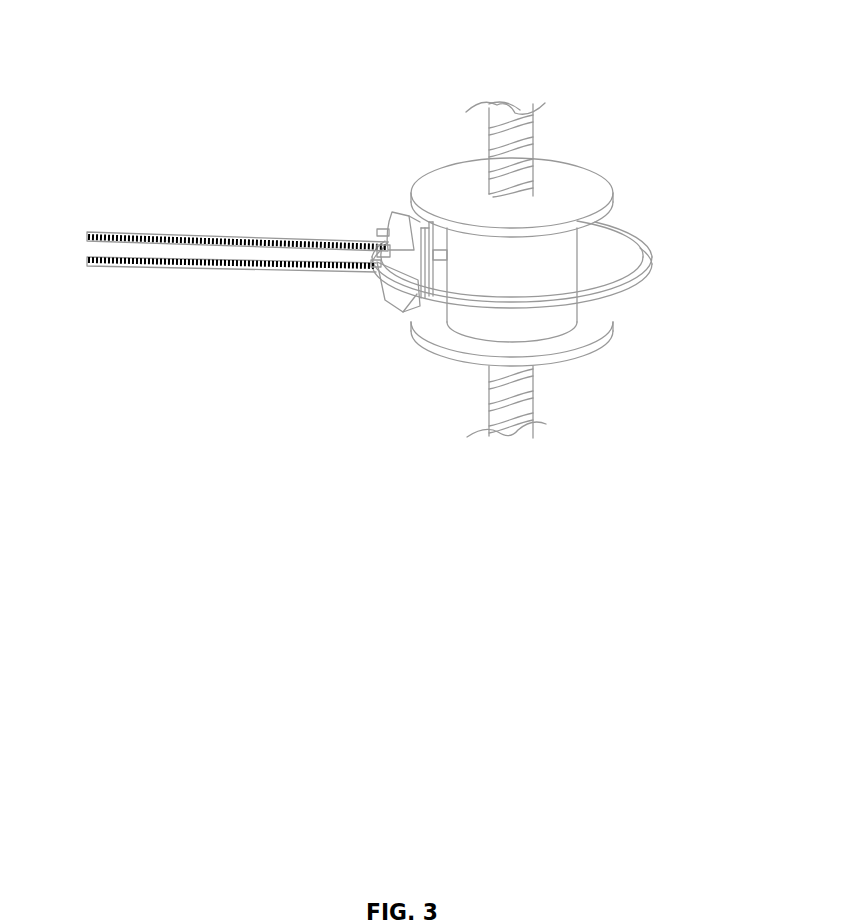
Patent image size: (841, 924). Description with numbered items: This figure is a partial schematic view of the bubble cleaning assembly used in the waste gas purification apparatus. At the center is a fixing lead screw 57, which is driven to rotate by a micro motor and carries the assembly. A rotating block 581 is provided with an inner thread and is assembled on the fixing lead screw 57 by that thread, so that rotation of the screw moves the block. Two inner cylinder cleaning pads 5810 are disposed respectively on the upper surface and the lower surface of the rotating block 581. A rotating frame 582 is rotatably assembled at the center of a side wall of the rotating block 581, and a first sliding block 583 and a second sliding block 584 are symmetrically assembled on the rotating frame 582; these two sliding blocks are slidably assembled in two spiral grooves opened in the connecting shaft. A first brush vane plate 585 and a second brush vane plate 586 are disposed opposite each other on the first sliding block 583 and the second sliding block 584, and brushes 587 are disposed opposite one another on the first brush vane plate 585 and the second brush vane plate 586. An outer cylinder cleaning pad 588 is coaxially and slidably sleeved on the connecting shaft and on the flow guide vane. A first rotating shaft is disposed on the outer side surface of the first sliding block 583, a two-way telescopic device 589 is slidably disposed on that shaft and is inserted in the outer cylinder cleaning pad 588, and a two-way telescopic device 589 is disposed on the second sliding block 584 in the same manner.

The fixing lead screw 57 is at (539, 135).
The rotating block 581 is at (470, 239).
The rotating frame 582 is at (438, 277).
The first sliding block 583 is at (400, 204).
The second sliding block 584 is at (397, 320).
The first brush vane plate 585 is at (233, 222).
The second brush vane plate 586 is at (291, 289).
The brushes 587 is at (197, 228).
The outer cylinder cleaning pad 588 is at (609, 312).
The two-way telescopic device 589 is at (371, 217).
The inner cylinder cleaning pad 5810 is at (575, 178).